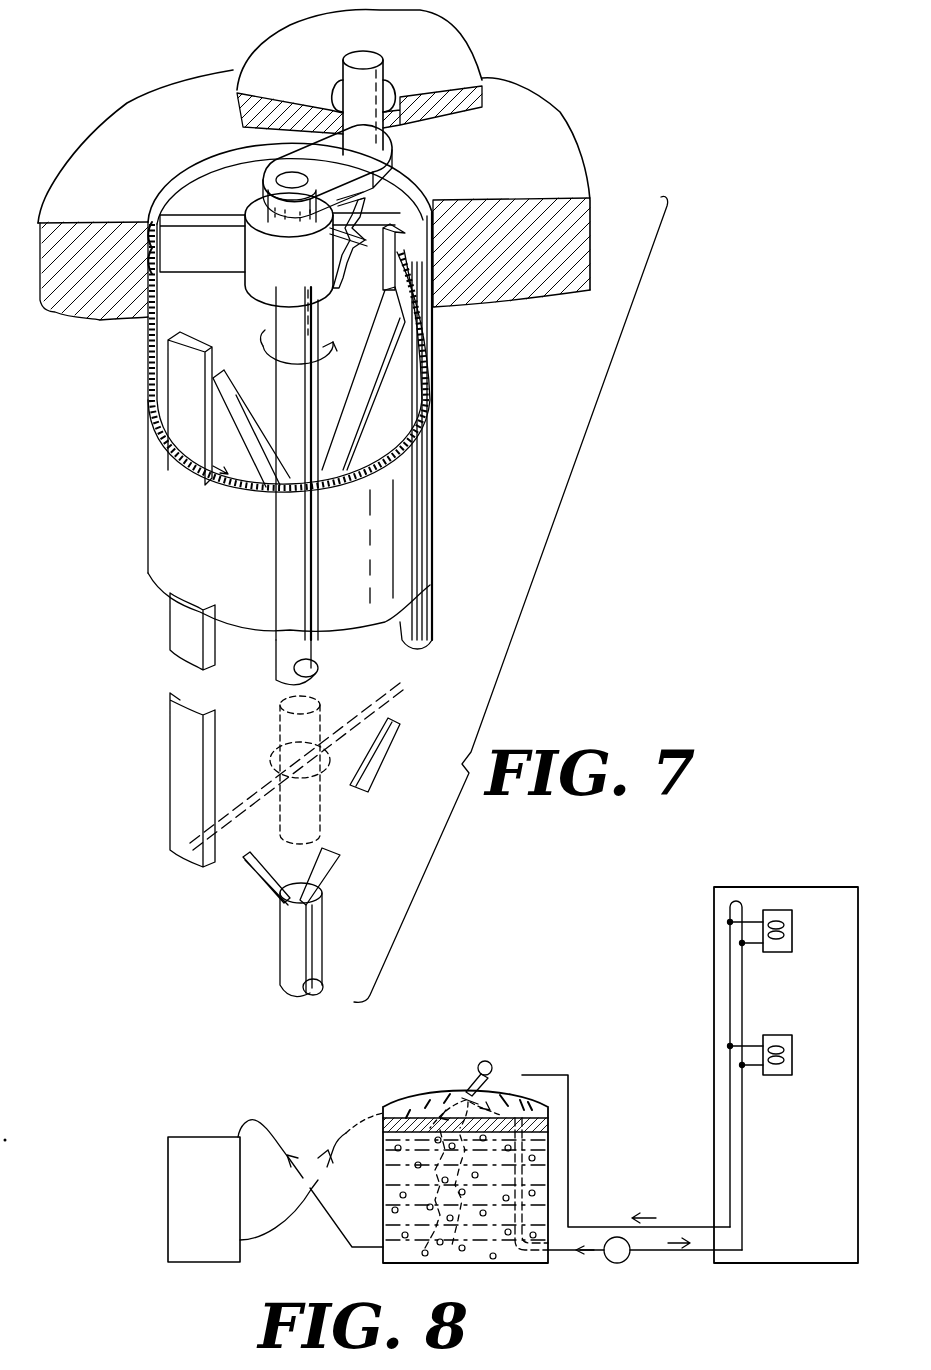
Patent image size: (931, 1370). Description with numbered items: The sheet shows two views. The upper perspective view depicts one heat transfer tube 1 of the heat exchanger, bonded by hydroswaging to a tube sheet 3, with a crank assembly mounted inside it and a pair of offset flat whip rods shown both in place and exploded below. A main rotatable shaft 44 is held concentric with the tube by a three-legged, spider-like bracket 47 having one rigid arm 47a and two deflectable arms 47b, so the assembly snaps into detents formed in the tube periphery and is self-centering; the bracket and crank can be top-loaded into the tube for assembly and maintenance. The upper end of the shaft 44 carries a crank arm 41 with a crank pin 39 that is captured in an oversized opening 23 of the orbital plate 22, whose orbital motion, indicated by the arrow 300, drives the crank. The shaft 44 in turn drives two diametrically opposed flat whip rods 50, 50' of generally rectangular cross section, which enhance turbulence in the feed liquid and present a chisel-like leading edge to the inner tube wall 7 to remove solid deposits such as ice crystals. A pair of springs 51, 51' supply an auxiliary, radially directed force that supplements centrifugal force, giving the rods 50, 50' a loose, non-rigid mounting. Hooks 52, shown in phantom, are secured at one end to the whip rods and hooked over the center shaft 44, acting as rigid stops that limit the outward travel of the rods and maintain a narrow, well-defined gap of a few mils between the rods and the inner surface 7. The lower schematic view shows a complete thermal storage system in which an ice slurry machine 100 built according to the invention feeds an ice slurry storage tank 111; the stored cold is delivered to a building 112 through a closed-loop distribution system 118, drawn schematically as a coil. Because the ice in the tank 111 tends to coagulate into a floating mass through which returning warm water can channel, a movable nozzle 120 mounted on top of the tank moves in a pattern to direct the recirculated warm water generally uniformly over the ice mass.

In FIG. 7, the heat transfer tube 1 is at (412, 509).
In FIG. 7, the tube sheet 3 is at (552, 143).
In FIG. 7, the inner tube wall 7 is at (240, 327).
In FIG. 7, the orbital plate 22 is at (438, 34).
In FIG. 7, the opening 23 is at (337, 92).
In FIG. 7, the crank pin 39 is at (385, 65).
In FIG. 7, the crank arm 41 is at (318, 163).
In FIG. 7, the main rotatable shaft 44 is at (292, 180).
In FIG. 7, the bracket 47 is at (237, 199).
In FIG. 7, the rigid arm 47a is at (205, 258).
In FIG. 7, the deflectable arm 47b is at (362, 224).
In FIG. 7, the flat whip rod 50 is at (331, 408).
In FIG. 7, the flat whip rod 50' is at (162, 730).
In FIG. 7, the spring 51 is at (385, 539).
In FIG. 7, the spring 51' is at (276, 637).
In FIG. 7, the hook 52 is at (370, 700).
In FIG. 7, the direction of rotation 300 is at (340, 36).
In FIG. 8, the ice slurry machine 100 is at (217, 1215).
In FIG. 8, the ice slurry storage tank 111 is at (495, 1266).
In FIG. 8, the building 112 is at (548, 1127).
In FIG. 8, the distribution system 118 is at (784, 952).
In FIG. 8, the movable nozzle 120 is at (470, 1082).